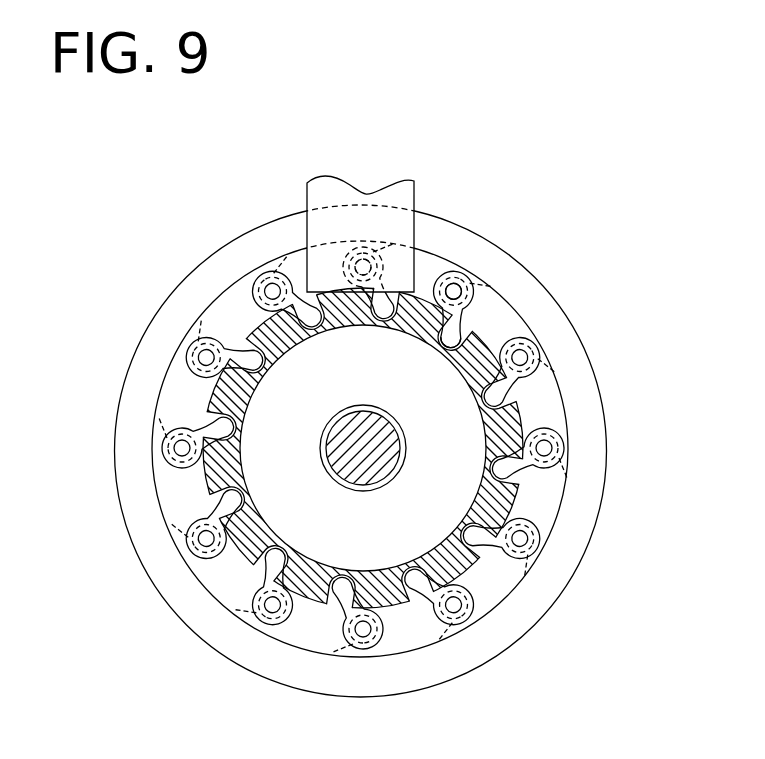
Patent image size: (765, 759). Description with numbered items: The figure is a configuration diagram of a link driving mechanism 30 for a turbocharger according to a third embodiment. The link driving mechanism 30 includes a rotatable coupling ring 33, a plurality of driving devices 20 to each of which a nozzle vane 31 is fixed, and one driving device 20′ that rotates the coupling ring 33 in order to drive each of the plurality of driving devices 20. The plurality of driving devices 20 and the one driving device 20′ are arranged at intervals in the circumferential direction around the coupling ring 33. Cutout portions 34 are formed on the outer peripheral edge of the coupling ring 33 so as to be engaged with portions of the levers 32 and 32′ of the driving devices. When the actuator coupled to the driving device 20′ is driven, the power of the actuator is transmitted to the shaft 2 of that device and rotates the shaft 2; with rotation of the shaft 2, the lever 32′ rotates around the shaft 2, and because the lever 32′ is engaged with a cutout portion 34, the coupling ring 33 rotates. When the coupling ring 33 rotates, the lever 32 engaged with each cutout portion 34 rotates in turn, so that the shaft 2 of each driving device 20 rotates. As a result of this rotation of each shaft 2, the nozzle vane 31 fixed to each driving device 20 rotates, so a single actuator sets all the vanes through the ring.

The shaft 2 is at (374, 298).
The driving device 20 is at (472, 300).
The driving device 20′ is at (390, 292).
The link driving mechanism 30 is at (213, 214).
The nozzle vane 31 is at (347, 652).
The lever 32 is at (466, 333).
The lever 32′ is at (397, 304).
The coupling ring 33 is at (525, 352).
The cutout portion 34 is at (434, 300).